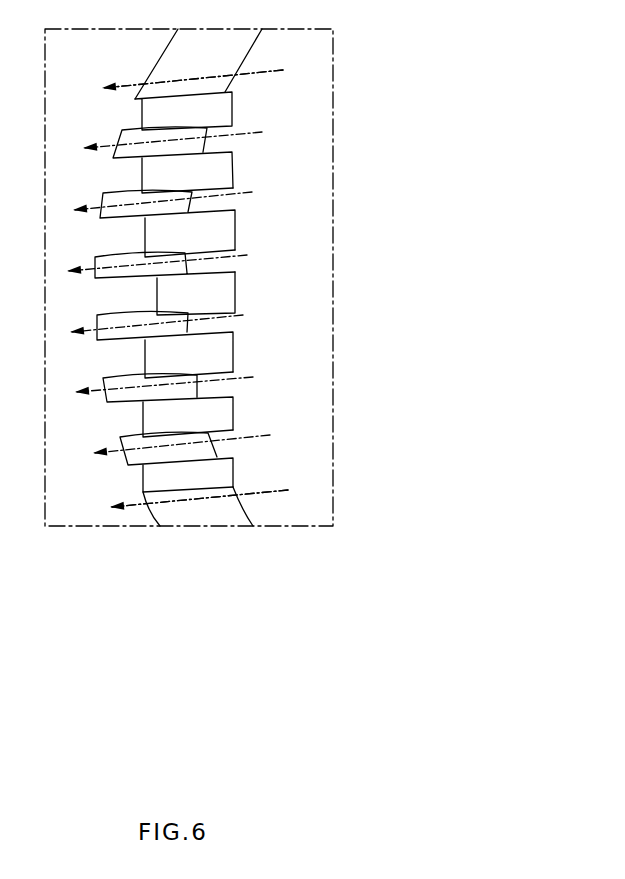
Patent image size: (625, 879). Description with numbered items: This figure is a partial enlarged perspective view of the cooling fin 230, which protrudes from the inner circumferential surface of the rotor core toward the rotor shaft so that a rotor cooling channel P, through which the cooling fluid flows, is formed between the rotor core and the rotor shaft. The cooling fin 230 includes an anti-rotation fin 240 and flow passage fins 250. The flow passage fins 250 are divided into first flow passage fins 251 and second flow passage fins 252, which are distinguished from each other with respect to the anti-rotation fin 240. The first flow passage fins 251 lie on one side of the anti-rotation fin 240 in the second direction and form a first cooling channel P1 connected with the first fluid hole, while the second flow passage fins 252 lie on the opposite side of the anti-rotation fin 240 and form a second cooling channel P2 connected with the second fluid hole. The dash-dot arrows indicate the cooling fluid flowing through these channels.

The cooling fin 230 is at (522, 310).
The anti-rotation fin 240 is at (234, 290).
The flow passage fins 250 is at (444, 140).
The first flow passage fins 251 is at (228, 233).
The second flow passage fins 252 is at (222, 478).
The rotor cooling channel P is at (395, 48).
The first cooling channel P1 is at (263, 72).
The second cooling channel P2 is at (267, 497).